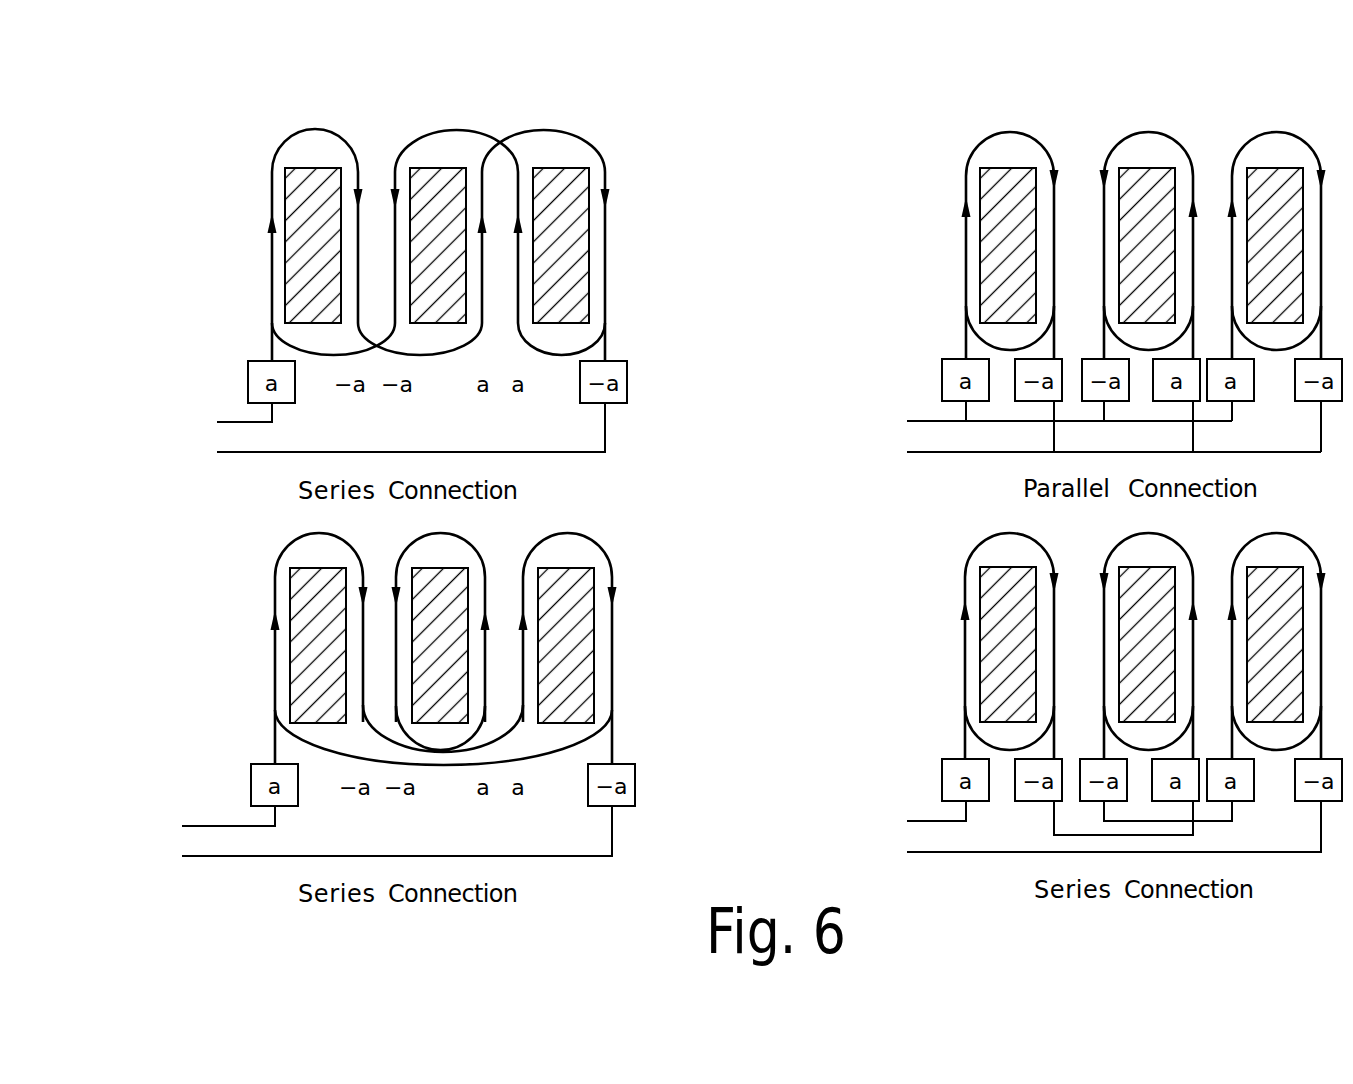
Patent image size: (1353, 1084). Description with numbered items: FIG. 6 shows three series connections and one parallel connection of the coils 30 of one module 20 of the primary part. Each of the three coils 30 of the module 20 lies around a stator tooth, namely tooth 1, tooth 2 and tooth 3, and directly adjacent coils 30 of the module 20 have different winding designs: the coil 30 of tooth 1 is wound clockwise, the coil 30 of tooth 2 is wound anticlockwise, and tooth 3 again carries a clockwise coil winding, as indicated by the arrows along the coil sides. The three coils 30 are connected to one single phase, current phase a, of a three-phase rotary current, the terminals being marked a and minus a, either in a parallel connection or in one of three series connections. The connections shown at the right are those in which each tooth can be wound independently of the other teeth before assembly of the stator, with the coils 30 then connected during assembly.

The module 20 is at (290, 119).
The coil 30 is at (538, 131).
The tooth 1 is at (660, 445).
The tooth 2 is at (792, 445).
The tooth 3 is at (918, 445).